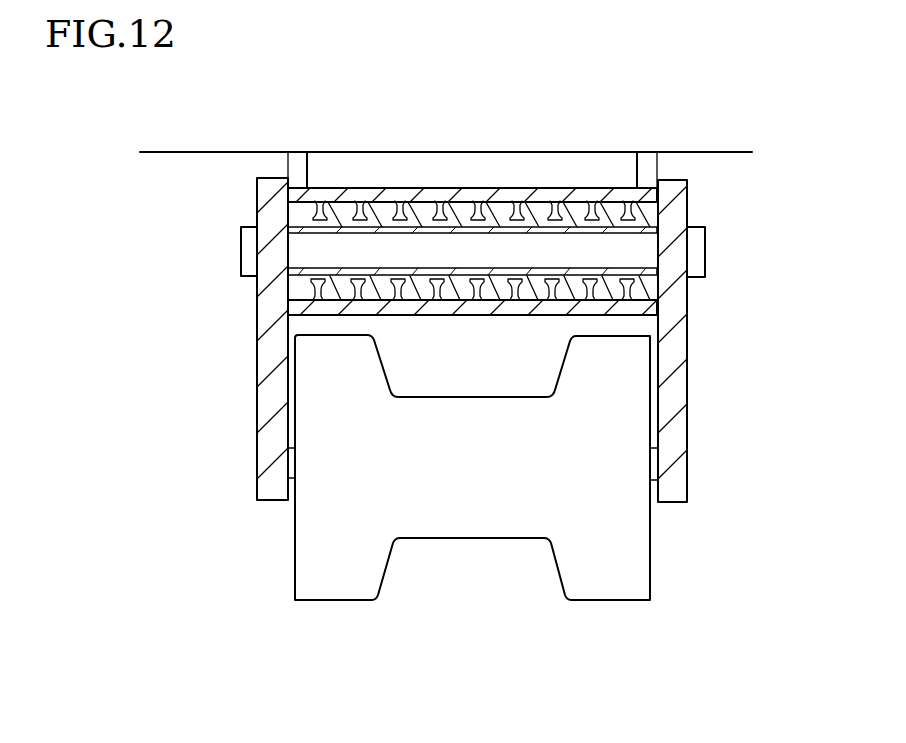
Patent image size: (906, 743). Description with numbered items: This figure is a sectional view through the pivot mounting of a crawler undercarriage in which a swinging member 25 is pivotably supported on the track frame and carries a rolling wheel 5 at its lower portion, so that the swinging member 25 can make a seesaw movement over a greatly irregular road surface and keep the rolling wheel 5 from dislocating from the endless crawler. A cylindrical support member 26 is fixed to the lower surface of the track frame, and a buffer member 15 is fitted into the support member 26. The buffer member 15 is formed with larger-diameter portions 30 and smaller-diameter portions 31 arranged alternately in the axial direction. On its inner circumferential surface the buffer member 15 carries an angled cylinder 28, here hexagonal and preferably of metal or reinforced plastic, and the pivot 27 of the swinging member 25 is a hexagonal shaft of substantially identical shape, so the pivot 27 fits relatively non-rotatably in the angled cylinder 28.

The rolling wheel 5 is at (602, 588).
The buffer member 15 is at (608, 206).
The swinging member 25 is at (258, 326).
The support member 26 is at (547, 196).
The pivot 27 is at (302, 250).
The angled cylinder 28 is at (633, 233).
The larger-diameter portion 30 is at (381, 206).
The smaller-diameter portion 31 is at (441, 206).